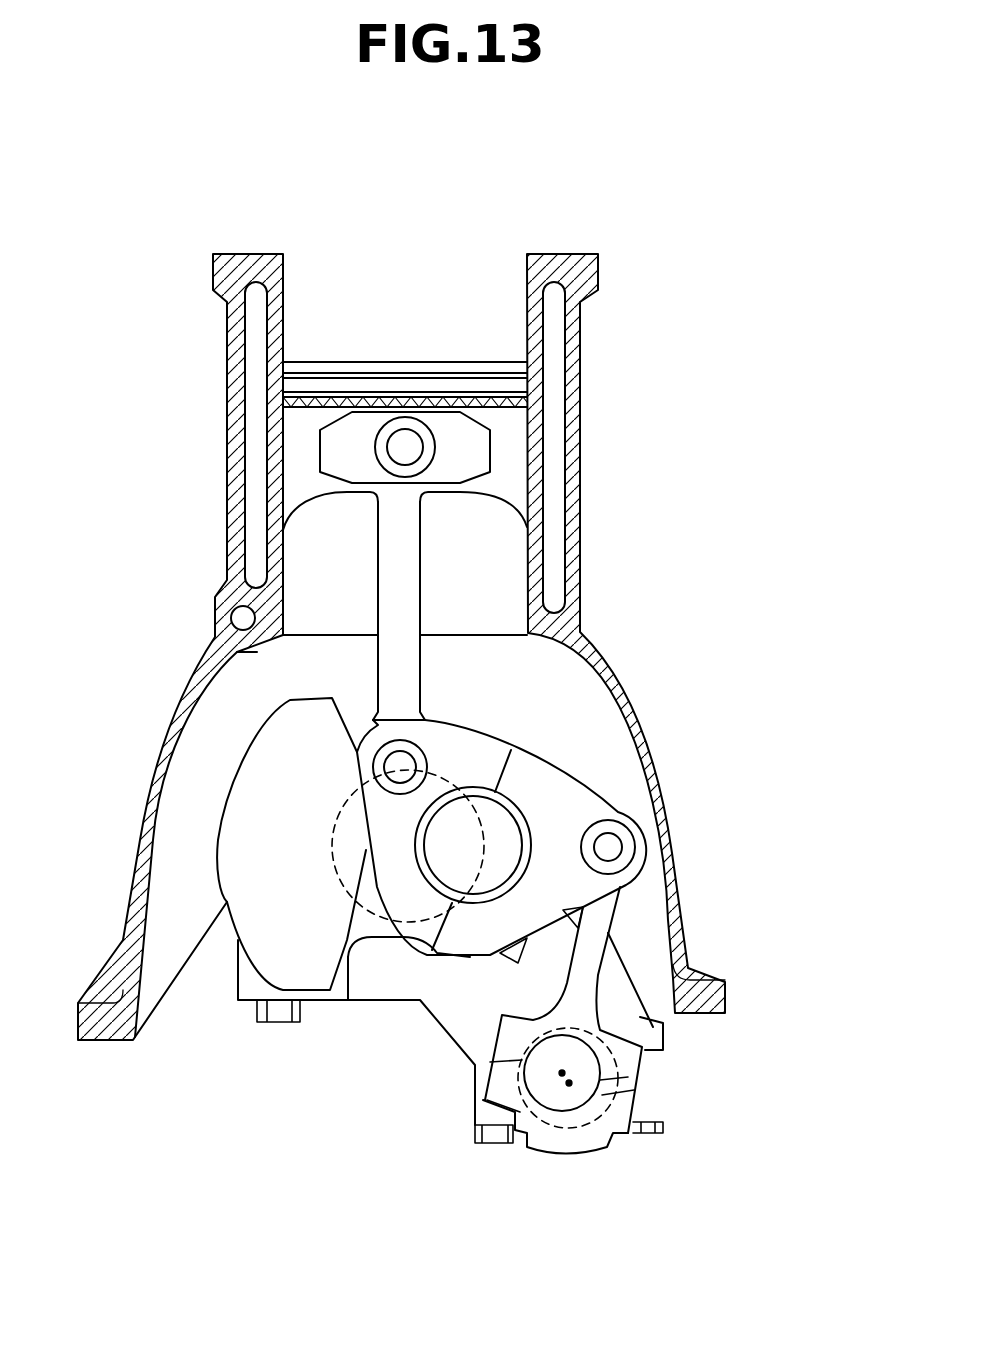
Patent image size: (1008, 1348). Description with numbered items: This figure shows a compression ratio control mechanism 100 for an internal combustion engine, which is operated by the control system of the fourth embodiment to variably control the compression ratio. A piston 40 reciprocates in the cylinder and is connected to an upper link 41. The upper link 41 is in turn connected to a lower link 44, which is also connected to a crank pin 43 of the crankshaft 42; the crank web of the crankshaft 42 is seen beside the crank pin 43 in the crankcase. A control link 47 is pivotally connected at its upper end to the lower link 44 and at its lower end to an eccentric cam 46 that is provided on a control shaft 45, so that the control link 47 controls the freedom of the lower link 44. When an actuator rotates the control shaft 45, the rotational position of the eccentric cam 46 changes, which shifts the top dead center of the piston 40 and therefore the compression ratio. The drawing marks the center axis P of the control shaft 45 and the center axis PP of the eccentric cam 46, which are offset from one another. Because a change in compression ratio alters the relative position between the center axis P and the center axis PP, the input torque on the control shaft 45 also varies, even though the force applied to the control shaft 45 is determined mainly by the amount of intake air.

The engine 100 is at (672, 721).
The piston 40 is at (512, 447).
The upper link 41 is at (400, 572).
The crankshaft 42 is at (350, 960).
The crank pin 43 is at (505, 843).
The lower link 44 is at (530, 775).
The control shaft 45 is at (653, 1133).
The eccentric cam 46 is at (553, 1095).
The control link 47 is at (585, 985).
The center axis of control shaft P is at (569, 1083).
The center axis of eccentric cam PP is at (562, 1073).